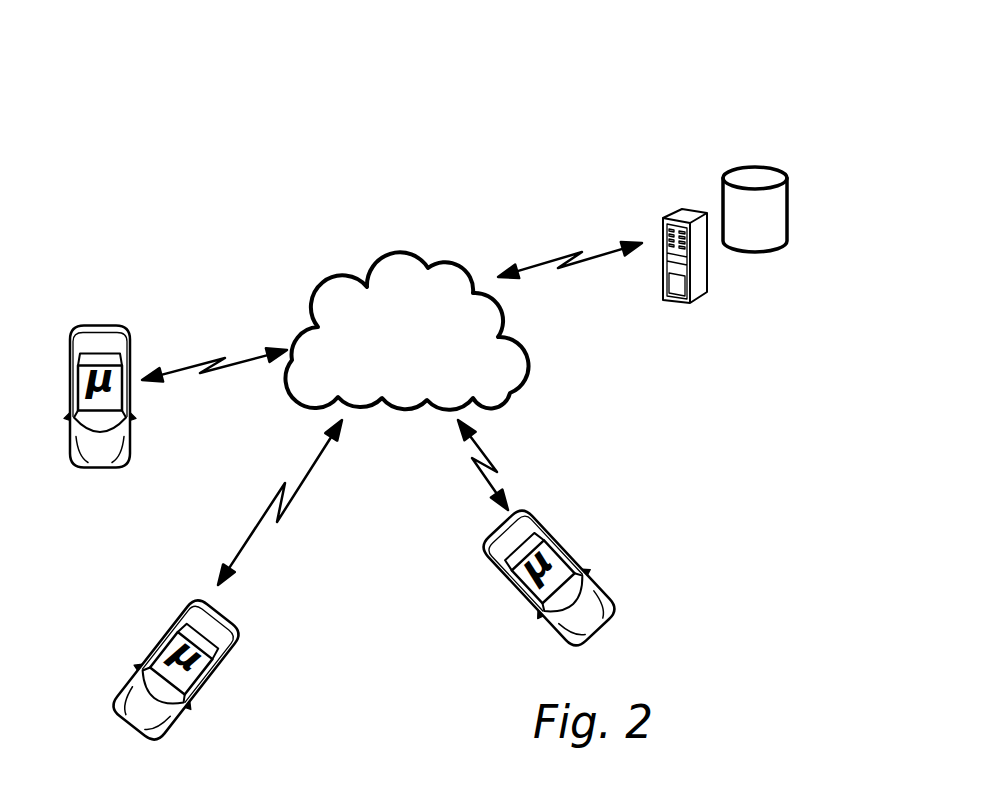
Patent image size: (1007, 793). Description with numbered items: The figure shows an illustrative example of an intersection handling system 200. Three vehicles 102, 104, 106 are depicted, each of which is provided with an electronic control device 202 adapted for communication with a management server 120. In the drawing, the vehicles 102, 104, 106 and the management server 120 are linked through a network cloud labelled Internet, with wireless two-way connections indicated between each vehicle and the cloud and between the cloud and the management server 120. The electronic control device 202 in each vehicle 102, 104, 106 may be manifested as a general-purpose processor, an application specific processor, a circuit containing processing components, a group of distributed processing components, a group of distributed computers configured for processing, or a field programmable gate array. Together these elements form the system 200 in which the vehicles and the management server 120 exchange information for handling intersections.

The intersection handling system 200 is at (212, 138).
The management server 120 is at (725, 127).
The vehicle 106 is at (93, 335).
The vehicle 102 is at (223, 638).
The vehicle 104 is at (597, 598).
The electronic control device 202 is at (118, 395).